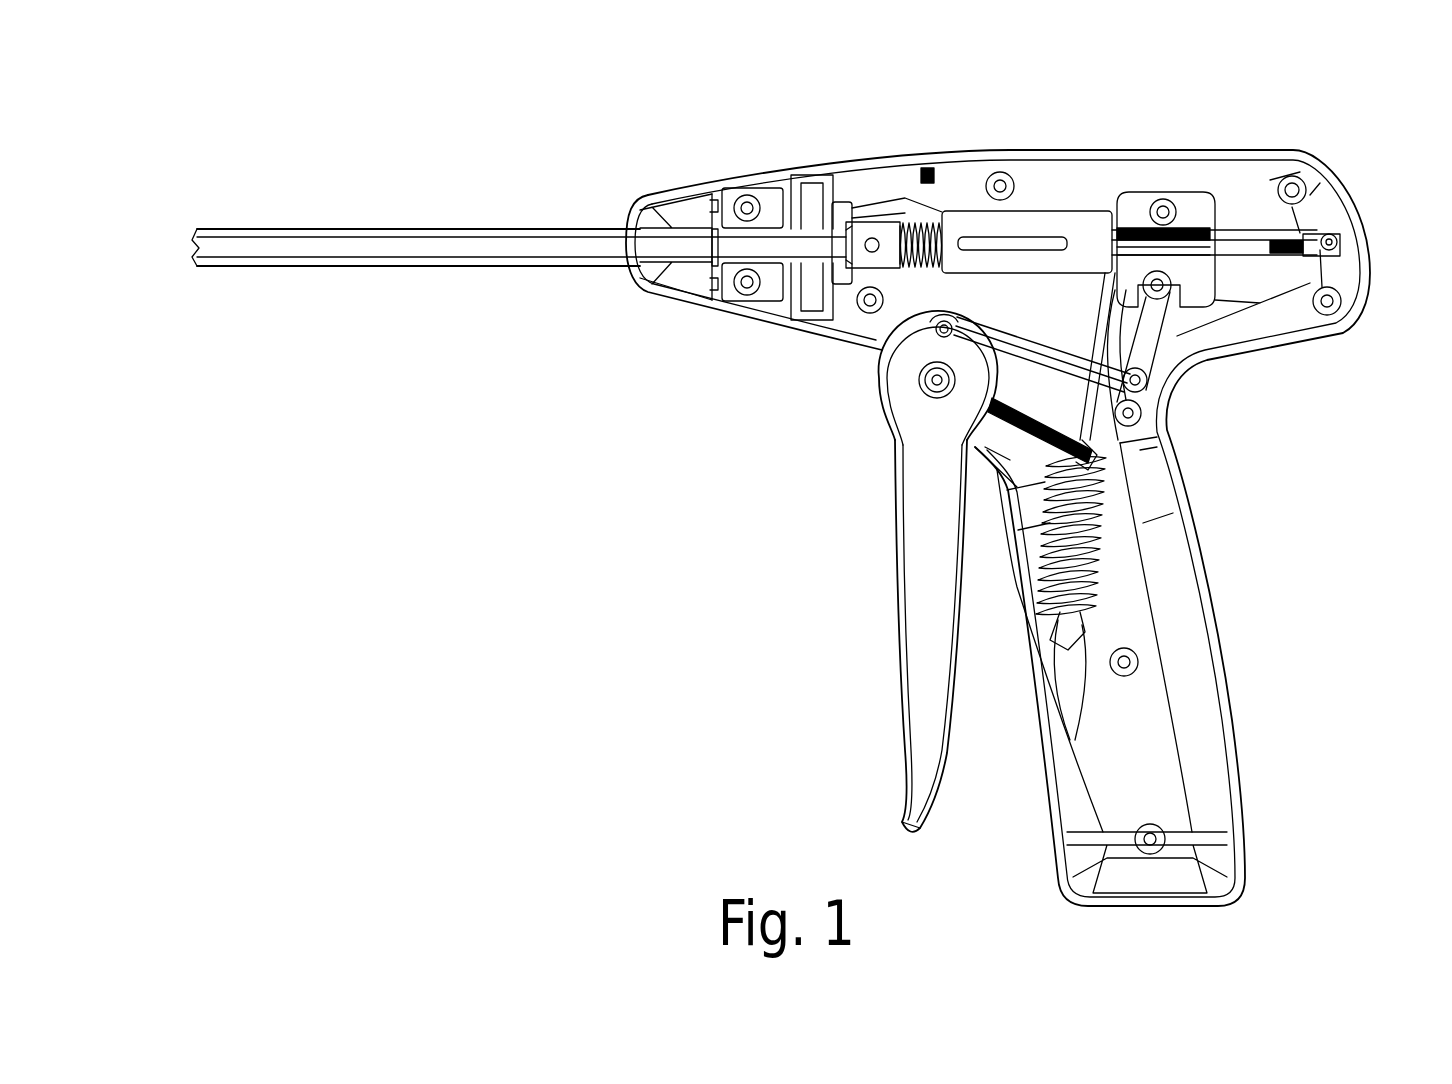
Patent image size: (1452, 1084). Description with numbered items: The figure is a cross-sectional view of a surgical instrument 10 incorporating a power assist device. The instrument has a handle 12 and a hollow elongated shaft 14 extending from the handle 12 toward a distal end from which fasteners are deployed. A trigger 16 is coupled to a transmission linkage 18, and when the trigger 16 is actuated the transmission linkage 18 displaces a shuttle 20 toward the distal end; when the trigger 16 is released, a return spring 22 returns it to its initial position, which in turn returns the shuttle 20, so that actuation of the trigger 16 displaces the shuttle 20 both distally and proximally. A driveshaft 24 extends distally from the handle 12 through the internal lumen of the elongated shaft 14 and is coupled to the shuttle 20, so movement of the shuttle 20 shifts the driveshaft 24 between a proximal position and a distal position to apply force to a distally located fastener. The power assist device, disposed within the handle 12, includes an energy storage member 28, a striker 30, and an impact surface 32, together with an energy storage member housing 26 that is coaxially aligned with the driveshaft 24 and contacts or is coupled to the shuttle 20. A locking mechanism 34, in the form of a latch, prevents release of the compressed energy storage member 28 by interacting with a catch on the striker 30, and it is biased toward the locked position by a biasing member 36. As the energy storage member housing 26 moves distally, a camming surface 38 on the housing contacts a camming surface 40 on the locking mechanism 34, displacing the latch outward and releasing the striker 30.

The surgical instrument 10 is at (335, 165).
The handle 12 is at (1320, 160).
The hollow elongated shaft 14 is at (382, 270).
The trigger 16 is at (923, 677).
The transmission linkage 18 is at (1155, 333).
The shuttle 20 is at (1200, 285).
The return spring 22 is at (1054, 612).
The driveshaft 24 is at (500, 260).
The energy storage member housing 26 is at (1015, 228).
The energy storage member 28 is at (917, 270).
The striker 30 is at (863, 256).
The impact surface 32 is at (843, 258).
The locking mechanism 34 is at (866, 206).
The biasing member 36 is at (926, 174).
The camming surface 38 is at (950, 216).
The camming surface 40 is at (905, 200).